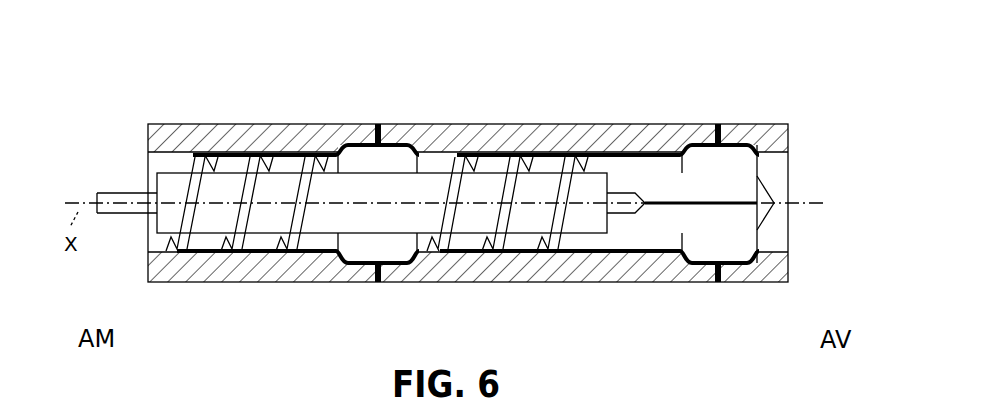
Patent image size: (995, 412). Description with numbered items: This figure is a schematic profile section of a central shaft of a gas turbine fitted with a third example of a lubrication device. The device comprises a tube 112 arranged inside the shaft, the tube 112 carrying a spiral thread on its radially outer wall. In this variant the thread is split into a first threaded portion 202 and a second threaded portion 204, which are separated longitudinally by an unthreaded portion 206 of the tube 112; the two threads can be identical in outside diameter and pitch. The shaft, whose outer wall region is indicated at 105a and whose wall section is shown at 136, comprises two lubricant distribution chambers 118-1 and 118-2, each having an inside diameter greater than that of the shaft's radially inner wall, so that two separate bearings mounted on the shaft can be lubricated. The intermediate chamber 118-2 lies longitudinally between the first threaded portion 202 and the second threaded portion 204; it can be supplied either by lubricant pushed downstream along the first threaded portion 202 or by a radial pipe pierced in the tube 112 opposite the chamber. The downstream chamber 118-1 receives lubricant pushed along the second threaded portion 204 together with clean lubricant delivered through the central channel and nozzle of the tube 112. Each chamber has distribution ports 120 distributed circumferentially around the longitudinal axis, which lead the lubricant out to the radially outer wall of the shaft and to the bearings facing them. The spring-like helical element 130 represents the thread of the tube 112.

The housing body 105a is at (468, 208).
The tube 112 is at (163, 224).
The distribution chamber 118-1 is at (697, 238).
The intermediate lubricant distribution chamber 118-2 is at (344, 260).
The distribution ports 120 is at (387, 273).
The spring 130 is at (185, 124).
The housing wall 136 is at (209, 261).
The first threaded portion 202 is at (292, 153).
The second threaded portion 204 is at (592, 124).
The unthreaded portion 206 is at (381, 176).